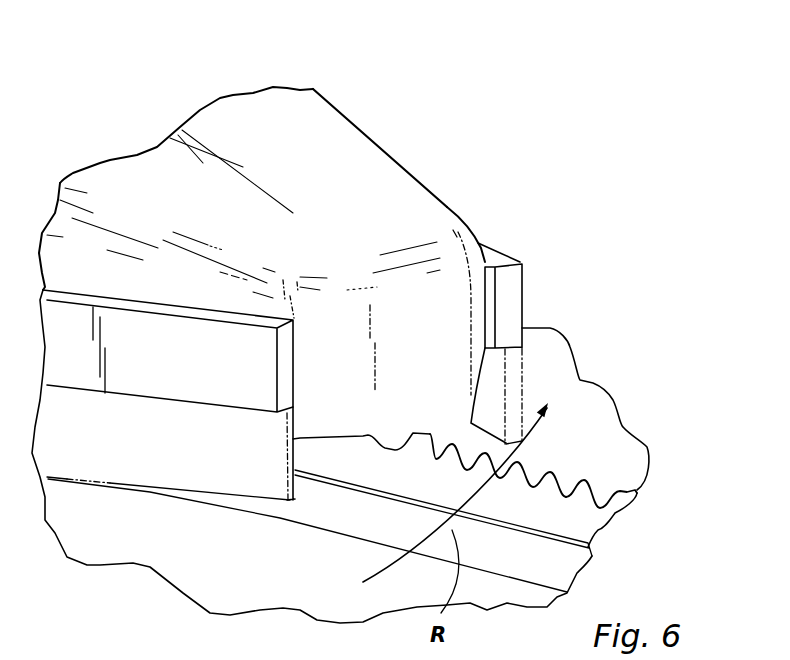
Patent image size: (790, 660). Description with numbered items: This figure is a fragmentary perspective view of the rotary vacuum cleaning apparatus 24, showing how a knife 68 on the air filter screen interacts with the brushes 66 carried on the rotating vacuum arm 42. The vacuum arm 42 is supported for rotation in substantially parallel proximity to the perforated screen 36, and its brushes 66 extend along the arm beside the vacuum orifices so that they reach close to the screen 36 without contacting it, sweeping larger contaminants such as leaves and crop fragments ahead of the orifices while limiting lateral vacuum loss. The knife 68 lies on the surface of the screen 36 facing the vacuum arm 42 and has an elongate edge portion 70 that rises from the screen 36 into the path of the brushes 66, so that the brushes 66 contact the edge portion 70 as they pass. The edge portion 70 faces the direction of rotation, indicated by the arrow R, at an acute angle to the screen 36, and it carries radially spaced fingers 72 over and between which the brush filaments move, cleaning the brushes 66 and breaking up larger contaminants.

The rotary vacuum cleaning apparatus 24 is at (358, 106).
The vacuum arm 42 is at (385, 147).
The perforated screen 36 is at (568, 378).
The brushes 66 is at (526, 389).
The fingers 72 is at (465, 443).
The knife 68 is at (587, 483).
The edge portion 70 is at (613, 513).